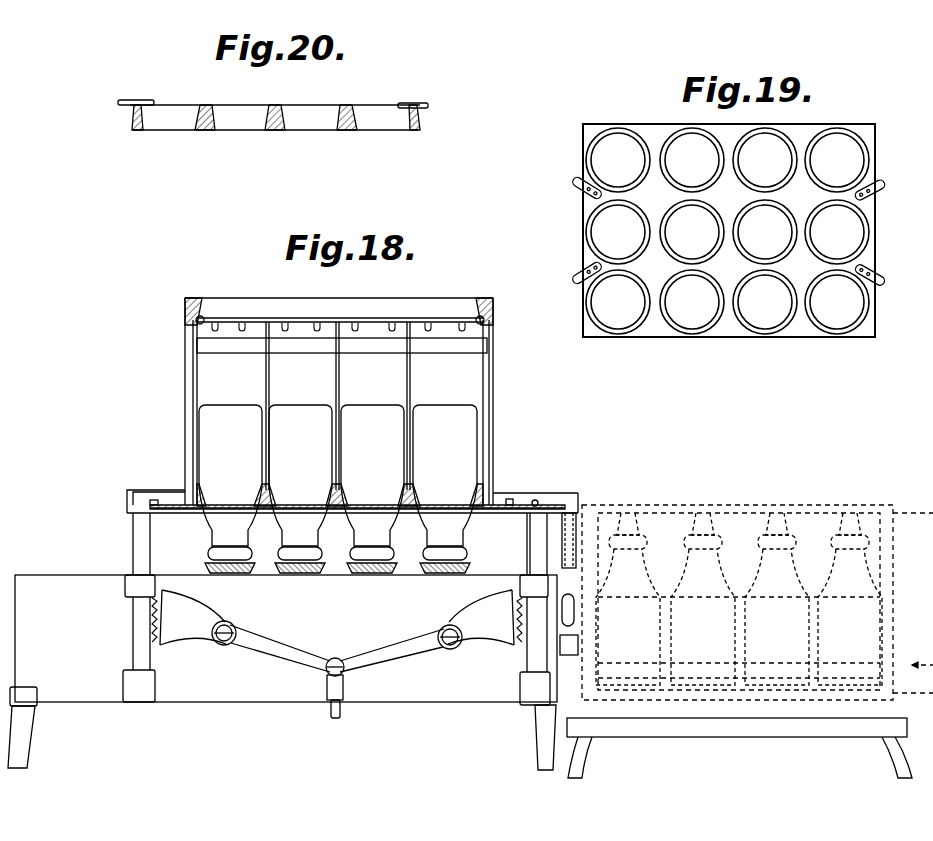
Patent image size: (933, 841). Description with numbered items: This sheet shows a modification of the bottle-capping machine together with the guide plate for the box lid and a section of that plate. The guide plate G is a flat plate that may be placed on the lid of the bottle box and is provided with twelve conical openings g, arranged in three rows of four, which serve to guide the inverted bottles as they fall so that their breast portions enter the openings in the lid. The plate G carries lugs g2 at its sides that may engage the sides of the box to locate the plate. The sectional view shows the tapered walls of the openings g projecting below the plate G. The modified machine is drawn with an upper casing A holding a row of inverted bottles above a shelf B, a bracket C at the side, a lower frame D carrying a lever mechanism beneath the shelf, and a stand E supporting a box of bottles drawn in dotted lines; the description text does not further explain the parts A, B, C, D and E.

In FIG. 20, the guide plate G is at (421, 124).
In FIG. 19, the guide plate G is at (876, 214).
In FIG. 20, the conical openings g is at (392, 118).
In FIG. 19, the conical openings g is at (855, 312).
In FIG. 19, the lugs g2 is at (573, 275).
In FIG. 18, the hood or cabinet A is at (494, 372).
In FIG. 18, the shelf or table B is at (534, 502).
In FIG. 18, the bracket C is at (570, 500).
In FIG. 18, the frame with lever mechanism D is at (270, 690).
In FIG. 18, the bench or stand E is at (900, 730).